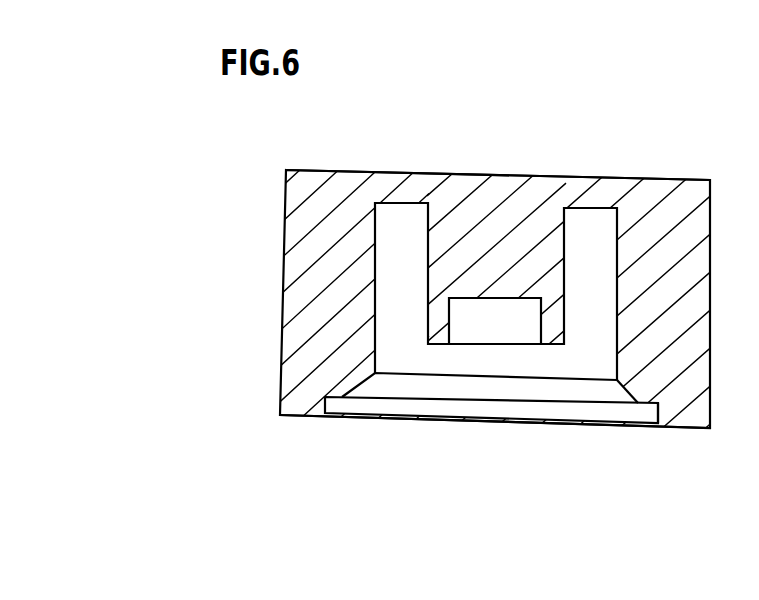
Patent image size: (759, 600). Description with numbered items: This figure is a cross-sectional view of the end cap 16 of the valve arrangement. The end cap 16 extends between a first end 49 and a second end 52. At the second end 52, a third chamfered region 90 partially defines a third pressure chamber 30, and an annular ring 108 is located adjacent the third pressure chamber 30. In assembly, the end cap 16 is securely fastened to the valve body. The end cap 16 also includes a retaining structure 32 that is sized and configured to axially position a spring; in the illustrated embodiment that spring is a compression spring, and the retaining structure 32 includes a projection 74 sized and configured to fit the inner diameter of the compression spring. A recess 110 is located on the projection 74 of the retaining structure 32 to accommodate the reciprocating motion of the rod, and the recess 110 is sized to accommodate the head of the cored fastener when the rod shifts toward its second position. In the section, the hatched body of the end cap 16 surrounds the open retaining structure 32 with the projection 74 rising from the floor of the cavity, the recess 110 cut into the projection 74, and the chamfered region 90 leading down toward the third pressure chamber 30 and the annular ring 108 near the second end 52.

The end cap 16 is at (672, 133).
The first end 49 is at (325, 170).
The retaining structure 32 is at (430, 258).
The projection 74 is at (432, 342).
The recess 110 is at (485, 330).
The third chamfered region 90 is at (632, 388).
The third pressure chamber 30 is at (514, 440).
The annular ring 108 is at (645, 425).
The second end 52 is at (300, 416).